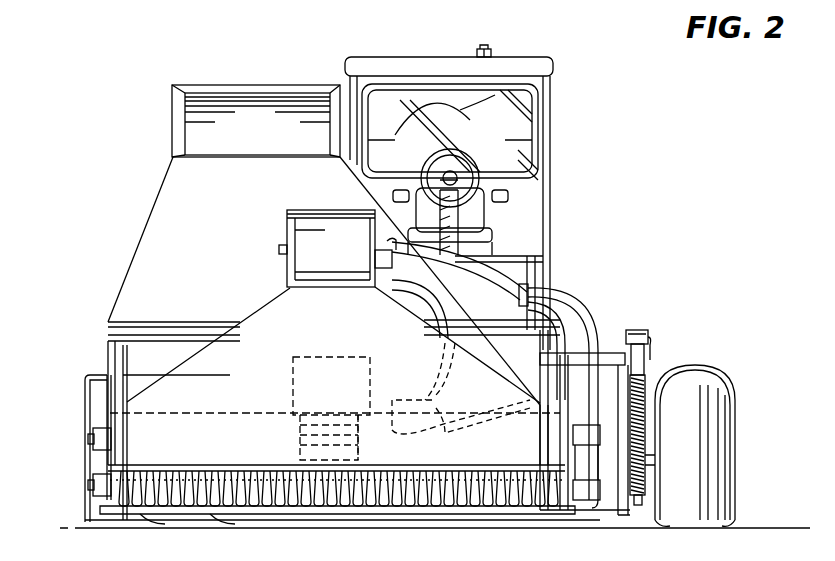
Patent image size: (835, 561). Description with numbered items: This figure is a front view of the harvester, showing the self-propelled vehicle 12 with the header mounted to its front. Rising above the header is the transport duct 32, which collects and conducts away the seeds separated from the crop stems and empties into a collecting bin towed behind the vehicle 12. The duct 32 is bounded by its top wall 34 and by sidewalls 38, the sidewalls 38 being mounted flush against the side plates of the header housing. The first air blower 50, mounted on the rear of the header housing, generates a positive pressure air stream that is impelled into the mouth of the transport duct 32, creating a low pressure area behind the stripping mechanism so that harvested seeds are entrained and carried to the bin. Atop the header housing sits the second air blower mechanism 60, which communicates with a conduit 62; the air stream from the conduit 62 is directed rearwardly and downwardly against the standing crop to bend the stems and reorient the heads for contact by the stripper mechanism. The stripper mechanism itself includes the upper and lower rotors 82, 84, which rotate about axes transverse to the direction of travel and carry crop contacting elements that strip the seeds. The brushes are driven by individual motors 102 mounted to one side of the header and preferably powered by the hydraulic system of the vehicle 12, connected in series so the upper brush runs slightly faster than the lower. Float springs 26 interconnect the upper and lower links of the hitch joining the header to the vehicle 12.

The self-propelled vehicle 12 is at (555, 140).
The float spring 26 is at (642, 395).
The transport duct 32 is at (382, 323).
The top wall 34 is at (256, 192).
The sidewall 38 is at (128, 282).
The first air blower 50 is at (293, 383).
The second air blower mechanism 60 is at (284, 224).
The conduit 62 is at (260, 330).
The upper rotor 82 is at (92, 440).
The lower rotor 84 is at (133, 508).
The motor 102 is at (597, 440).